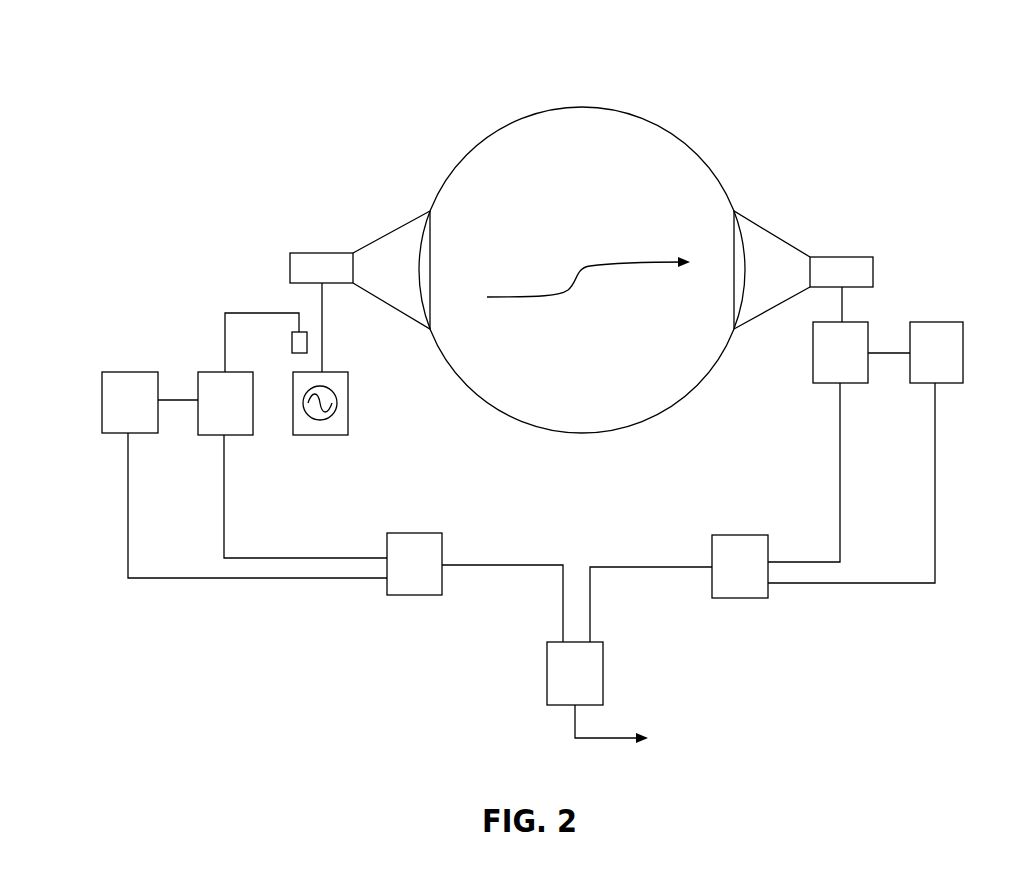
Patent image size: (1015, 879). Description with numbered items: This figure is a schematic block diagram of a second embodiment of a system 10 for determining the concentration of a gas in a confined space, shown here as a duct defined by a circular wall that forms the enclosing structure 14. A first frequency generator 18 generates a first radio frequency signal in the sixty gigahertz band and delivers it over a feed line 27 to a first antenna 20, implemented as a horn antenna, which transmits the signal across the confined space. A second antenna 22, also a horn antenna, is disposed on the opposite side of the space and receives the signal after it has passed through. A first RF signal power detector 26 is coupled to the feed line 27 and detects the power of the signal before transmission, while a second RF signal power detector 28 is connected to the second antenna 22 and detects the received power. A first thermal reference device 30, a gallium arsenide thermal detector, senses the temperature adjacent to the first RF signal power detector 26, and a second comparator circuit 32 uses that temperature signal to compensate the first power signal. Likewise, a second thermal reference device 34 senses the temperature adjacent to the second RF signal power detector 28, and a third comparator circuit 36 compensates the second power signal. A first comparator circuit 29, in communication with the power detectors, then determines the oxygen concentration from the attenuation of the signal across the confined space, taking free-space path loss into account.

The system 10 is at (825, 672).
The structure 14 is at (673, 135).
The first frequency generator 18 is at (348, 400).
The first antenna 20 is at (392, 231).
The second antenna 22 is at (775, 235).
The first RF signal power detector 26 is at (215, 372).
The feed line 27 is at (322, 320).
The second RF signal power detector 28 is at (813, 352).
The first comparator circuit 29 is at (603, 673).
The first thermal reference device 30 is at (102, 400).
The second comparator circuit 32 is at (407, 597).
The second thermal reference device 34 is at (963, 353).
The third comparator circuit 36 is at (737, 600).